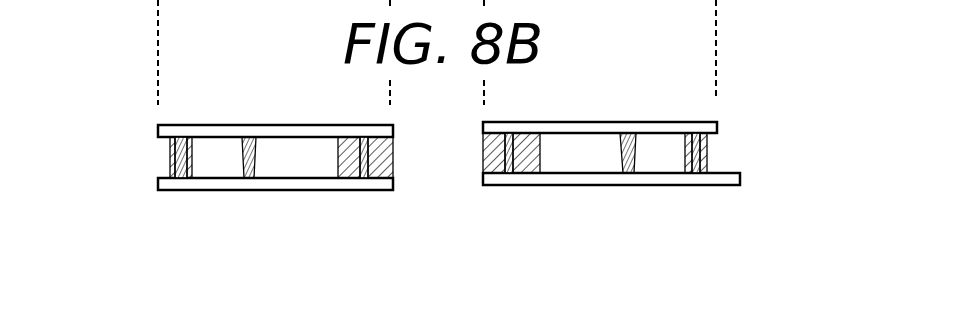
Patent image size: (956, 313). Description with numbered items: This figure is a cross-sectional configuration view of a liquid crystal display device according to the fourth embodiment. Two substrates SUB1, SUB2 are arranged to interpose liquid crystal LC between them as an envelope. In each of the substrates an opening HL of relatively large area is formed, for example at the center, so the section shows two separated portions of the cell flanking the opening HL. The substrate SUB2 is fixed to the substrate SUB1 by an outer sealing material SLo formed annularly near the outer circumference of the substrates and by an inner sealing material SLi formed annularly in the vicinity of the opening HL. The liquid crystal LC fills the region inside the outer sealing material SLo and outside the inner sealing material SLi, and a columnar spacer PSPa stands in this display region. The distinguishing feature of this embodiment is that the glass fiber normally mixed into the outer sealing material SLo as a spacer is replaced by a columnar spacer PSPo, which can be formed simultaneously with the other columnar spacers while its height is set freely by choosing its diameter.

The substrate SUB1 is at (320, 185).
The substrate SUB2 is at (213, 128).
The outer sealing material SLo is at (172, 163).
The inner sealing material SLi is at (393, 163).
The columnar spacer PSPo is at (177, 128).
The columnar spacer PSPa is at (243, 153).
The opening HL is at (444, 153).
The liquid crystal LC is at (580, 165).